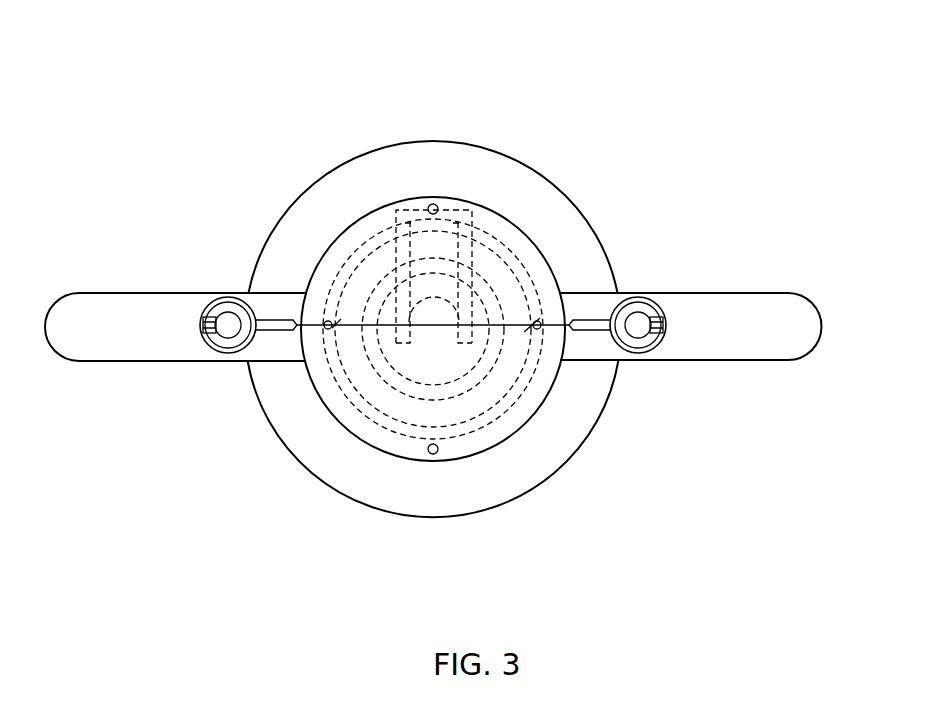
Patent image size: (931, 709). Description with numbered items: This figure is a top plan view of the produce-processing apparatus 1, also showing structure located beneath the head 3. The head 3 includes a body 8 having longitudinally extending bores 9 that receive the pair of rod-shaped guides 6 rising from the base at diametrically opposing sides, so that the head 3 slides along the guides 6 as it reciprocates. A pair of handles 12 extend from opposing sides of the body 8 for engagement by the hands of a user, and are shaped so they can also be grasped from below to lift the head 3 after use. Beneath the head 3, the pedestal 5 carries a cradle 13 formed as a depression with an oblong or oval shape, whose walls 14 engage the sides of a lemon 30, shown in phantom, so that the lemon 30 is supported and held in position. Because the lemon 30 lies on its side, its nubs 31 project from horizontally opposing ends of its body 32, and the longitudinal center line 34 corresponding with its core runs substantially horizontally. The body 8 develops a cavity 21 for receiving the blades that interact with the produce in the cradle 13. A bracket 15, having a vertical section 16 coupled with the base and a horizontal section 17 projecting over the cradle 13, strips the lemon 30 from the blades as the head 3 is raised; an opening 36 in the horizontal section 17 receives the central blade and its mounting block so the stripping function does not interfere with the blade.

The apparatus 1 is at (612, 72).
The head 3 is at (595, 245).
The pedestal 5 is at (502, 245).
The guides 6 is at (226, 332).
The body 8 is at (528, 423).
The bores 9 is at (230, 322).
The handles 12 is at (87, 340).
The cradle 13 is at (460, 395).
The walls 14 is at (355, 382).
The bracket 15 is at (478, 198).
The vertical section 16 is at (396, 232).
The horizontal section 17 is at (380, 232).
The cavity 21 is at (520, 388).
The lemon 30 is at (297, 460).
The nubs 31 is at (328, 320).
The body 32 is at (420, 392).
The longitudinal center line 34 is at (562, 361).
The opening 36 is at (438, 312).